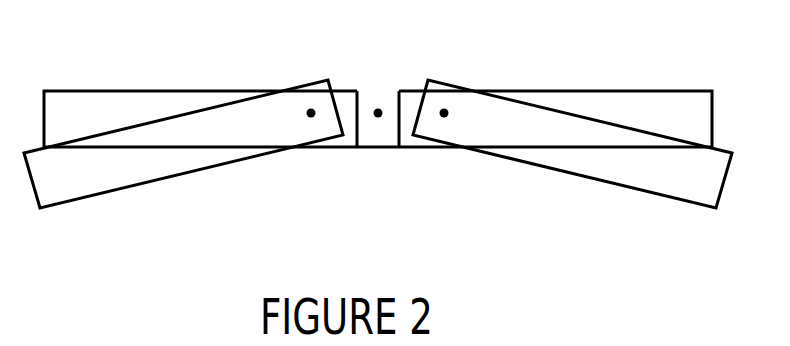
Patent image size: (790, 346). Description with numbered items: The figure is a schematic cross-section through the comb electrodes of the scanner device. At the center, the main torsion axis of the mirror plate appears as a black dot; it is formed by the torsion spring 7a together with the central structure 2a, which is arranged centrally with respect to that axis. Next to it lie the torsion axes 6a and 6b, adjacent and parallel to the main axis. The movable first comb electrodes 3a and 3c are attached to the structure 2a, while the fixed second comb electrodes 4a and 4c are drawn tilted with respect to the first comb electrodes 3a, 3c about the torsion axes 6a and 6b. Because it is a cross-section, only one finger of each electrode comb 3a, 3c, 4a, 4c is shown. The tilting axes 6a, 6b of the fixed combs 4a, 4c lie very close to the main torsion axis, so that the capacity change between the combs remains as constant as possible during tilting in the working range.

The first comb electrode 3a is at (70, 113).
The first comb electrode 3c is at (678, 113).
The structure 2a is at (363, 112).
The second comb electrode 4a is at (197, 135).
The second comb electrode 4c is at (553, 135).
The torsion axis 6a is at (311, 108).
The torsion axis 6b is at (445, 108).
The torsion spring 7a is at (376, 118).